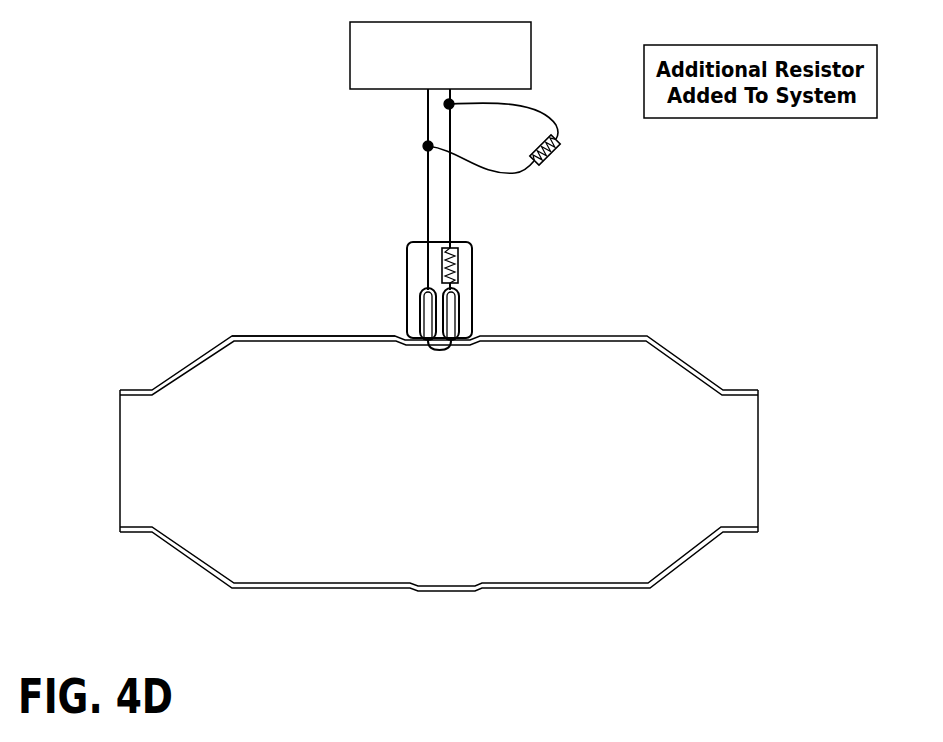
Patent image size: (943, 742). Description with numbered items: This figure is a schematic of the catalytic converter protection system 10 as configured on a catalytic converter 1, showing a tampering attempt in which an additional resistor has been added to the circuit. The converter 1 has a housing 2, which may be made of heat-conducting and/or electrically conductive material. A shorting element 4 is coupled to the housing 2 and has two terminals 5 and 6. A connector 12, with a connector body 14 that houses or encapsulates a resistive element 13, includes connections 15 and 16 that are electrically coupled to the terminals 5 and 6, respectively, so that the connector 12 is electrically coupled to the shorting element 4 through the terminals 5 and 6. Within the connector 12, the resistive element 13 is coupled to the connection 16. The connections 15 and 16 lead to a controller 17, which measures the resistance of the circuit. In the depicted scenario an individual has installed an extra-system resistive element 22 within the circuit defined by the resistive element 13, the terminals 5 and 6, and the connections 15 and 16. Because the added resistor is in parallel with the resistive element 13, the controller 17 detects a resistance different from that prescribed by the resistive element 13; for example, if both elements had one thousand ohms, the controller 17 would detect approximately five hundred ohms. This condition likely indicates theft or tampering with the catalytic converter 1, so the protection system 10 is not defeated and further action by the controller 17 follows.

The catalytic converter 1 is at (180, 358).
The housing 2 is at (262, 336).
The shorting element 4 is at (425, 347).
The terminal 5 is at (422, 302).
The terminal 6 is at (456, 308).
The catalytic converter protection system 10 is at (421, 206).
The connector 12 is at (404, 273).
The resistive element 13 is at (462, 267).
The connector body 14 is at (422, 242).
The connection 15 is at (427, 183).
The connection 16 is at (450, 215).
The controller 17 is at (438, 68).
The extra-system resistive element 22 is at (565, 158).